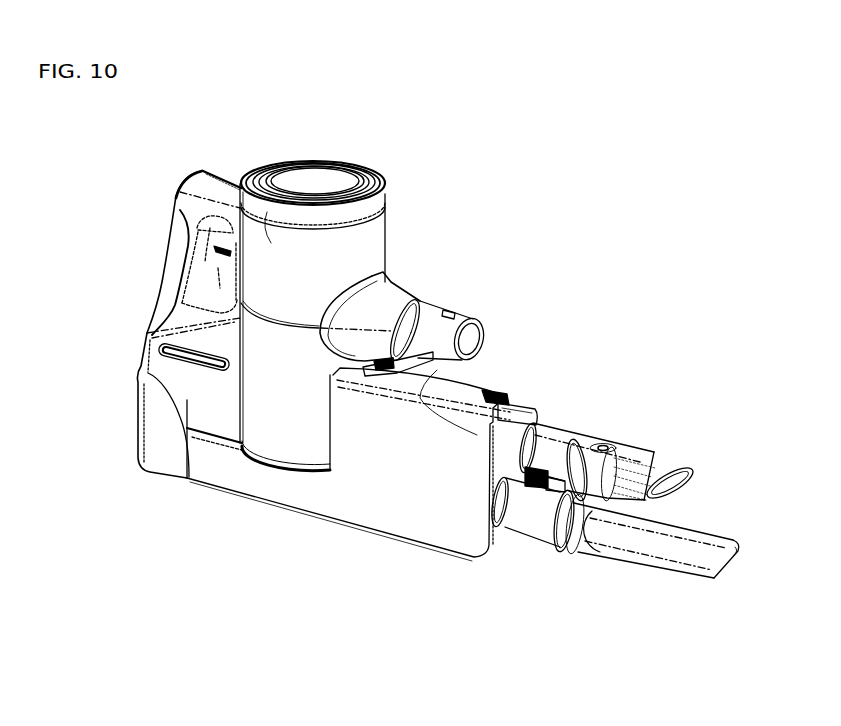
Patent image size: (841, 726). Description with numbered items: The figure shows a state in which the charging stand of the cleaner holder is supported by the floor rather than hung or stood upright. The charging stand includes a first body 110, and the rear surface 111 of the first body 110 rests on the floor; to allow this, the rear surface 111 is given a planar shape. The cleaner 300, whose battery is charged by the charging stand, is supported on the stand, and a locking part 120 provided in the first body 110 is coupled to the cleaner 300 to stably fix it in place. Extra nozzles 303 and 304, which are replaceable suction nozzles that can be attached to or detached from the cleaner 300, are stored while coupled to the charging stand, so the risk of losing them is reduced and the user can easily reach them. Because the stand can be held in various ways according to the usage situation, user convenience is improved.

The first body 110 is at (202, 491).
The rear surface 111 is at (296, 510).
The locking part 120 is at (157, 428).
The cleaner 300 is at (274, 247).
The extra nozzle 303 is at (556, 440).
The extra nozzle 304 is at (543, 520).